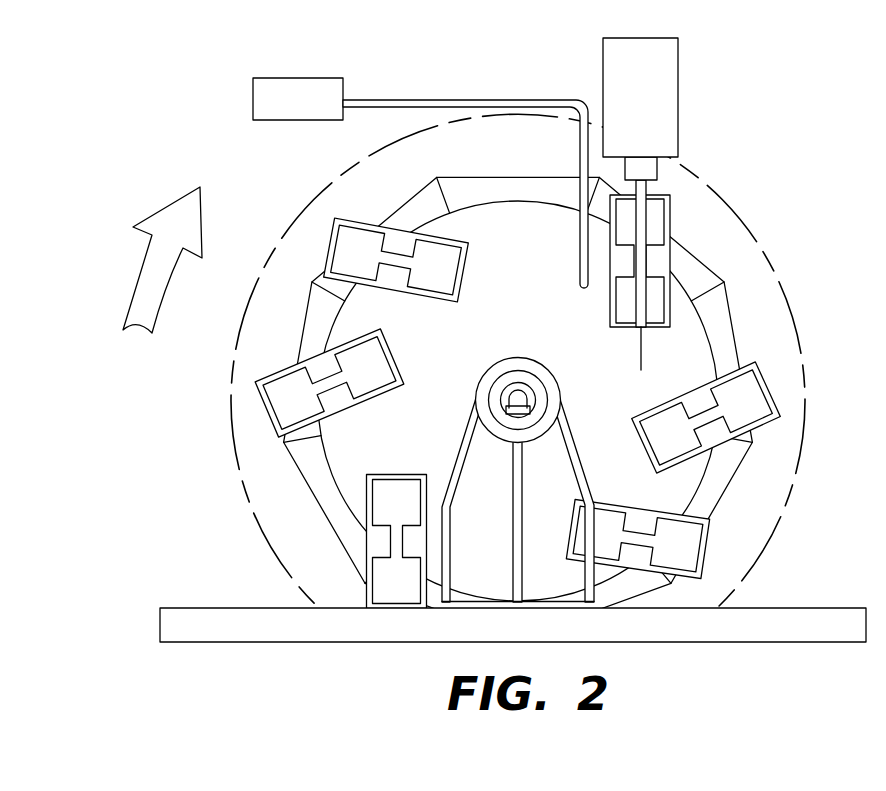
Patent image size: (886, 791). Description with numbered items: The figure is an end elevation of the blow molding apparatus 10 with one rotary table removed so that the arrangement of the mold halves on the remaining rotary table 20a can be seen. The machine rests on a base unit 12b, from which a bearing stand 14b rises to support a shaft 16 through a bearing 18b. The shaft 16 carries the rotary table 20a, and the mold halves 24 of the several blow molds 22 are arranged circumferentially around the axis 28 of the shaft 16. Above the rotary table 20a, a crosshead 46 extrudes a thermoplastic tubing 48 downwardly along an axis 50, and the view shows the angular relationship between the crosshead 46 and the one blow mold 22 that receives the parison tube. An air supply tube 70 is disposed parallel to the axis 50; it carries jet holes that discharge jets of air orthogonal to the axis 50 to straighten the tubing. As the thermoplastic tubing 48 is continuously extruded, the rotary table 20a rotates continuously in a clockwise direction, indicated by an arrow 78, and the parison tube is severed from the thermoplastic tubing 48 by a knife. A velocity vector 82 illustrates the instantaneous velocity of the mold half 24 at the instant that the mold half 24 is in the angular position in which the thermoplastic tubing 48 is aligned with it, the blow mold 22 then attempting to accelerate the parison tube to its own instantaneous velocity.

The blow molding apparatus 10 is at (124, 44).
The base unit 12b is at (678, 642).
The bearing stand 14b is at (458, 455).
The shaft 16 is at (560, 399).
The bearing 18b is at (510, 385).
The rotary table 20a is at (247, 498).
The blow mold 22 is at (670, 266).
The mold half 24 is at (672, 229).
The axis 28 is at (560, 399).
The crosshead 46 is at (678, 100).
The thermoplastic tubing 48 is at (646, 188).
The axis 50 is at (641, 357).
The air supply tube 70 is at (578, 238).
The arrow 78 is at (130, 276).
The velocity vector 82 is at (20, 473).